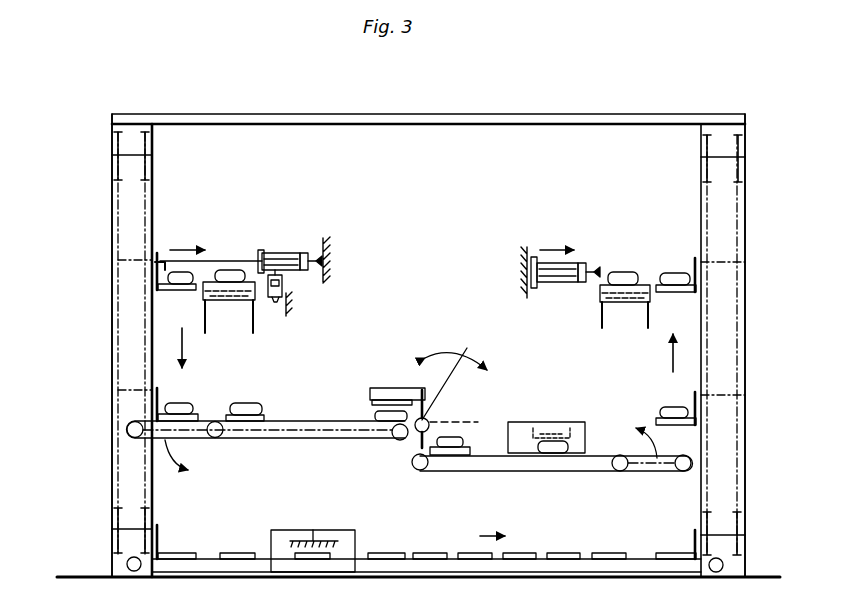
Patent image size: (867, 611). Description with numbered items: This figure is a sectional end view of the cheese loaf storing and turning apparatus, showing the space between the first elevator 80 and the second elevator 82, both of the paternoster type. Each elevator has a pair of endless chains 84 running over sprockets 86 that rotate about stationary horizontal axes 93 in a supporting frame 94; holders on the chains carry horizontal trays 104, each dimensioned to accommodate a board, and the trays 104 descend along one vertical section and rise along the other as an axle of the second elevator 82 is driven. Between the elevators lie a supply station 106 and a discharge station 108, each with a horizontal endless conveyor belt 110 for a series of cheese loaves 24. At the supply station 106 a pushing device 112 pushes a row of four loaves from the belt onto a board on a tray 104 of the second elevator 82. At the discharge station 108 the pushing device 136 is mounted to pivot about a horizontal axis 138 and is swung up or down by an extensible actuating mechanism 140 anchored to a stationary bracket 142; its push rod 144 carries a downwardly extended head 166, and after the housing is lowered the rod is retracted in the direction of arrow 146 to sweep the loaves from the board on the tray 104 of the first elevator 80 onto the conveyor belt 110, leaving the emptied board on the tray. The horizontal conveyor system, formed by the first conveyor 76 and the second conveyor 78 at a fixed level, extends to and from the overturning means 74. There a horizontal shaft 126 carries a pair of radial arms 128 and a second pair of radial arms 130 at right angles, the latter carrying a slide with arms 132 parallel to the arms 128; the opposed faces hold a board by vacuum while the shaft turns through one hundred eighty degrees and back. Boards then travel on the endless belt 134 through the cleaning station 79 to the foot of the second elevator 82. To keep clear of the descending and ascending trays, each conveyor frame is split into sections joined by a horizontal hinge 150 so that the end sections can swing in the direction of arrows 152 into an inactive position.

The cheese loaves 24 is at (612, 272).
The overturning means 74 is at (375, 385).
The first conveyor 76 is at (275, 438).
The second conveyor 78 is at (520, 471).
The cleaning station 79 is at (328, 528).
The first elevator 80 is at (135, 190).
The second elevator 82 is at (700, 205).
The endless chains 84 is at (145, 234).
The sprockets 86 is at (710, 173).
The horizontal axes 93 is at (135, 155).
The supporting frame 94 is at (118, 456).
The tray 104 is at (158, 298).
The supply station 106 is at (574, 243).
The discharge station 108 is at (333, 243).
The conveyor belt 110 is at (228, 300).
The pushing device 112 is at (545, 272).
The horizontal shaft 126 is at (410, 438).
The radial arms 128 is at (468, 421).
The radial arms 130 is at (428, 402).
The arms 132 is at (410, 390).
The endless belt 134 is at (262, 553).
The pushing device 136 is at (284, 252).
The horizontal axis 138 is at (322, 248).
The actuating mechanism 140 is at (282, 287).
The stationary bracket 142 is at (290, 315).
The push rod 144 is at (240, 261).
The direction of movement 146 is at (198, 248).
The horizontal hinge 150 is at (216, 421).
The arrows 152 is at (172, 470).
The head 166 is at (155, 268).